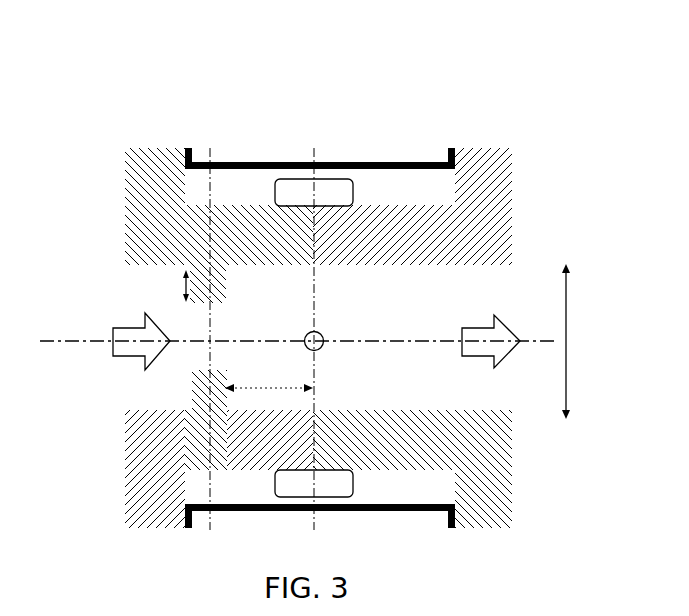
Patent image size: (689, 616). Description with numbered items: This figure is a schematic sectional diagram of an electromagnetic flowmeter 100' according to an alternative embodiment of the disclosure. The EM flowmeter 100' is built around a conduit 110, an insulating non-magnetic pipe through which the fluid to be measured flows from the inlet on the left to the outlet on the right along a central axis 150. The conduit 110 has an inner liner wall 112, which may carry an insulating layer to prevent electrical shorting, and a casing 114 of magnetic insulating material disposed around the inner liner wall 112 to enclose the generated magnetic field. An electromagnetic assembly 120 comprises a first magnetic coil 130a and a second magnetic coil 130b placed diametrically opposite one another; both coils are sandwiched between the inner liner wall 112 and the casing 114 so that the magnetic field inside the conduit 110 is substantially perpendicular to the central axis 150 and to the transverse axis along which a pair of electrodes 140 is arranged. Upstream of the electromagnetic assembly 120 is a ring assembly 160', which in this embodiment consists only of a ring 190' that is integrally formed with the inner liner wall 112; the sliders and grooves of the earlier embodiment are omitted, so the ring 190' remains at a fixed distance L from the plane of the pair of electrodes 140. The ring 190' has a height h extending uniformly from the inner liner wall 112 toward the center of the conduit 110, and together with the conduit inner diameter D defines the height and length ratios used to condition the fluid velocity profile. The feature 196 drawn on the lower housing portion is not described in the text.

The EM flowmeter 100' is at (310, 277).
The conduit 110 is at (154, 144).
The inner liner wall 112 is at (500, 200).
The casing 114 is at (393, 163).
The electromagnetic assembly 120 is at (302, 186).
The first magnetic coil 130a is at (355, 189).
The second magnetic coil 130b is at (353, 478).
The pair of electrodes 140 is at (324, 341).
The central axis 150 is at (57, 340).
The ring assembly 160' is at (279, 464).
The ring 190' is at (218, 331).
The lower housing portion 196 is at (125, 475).